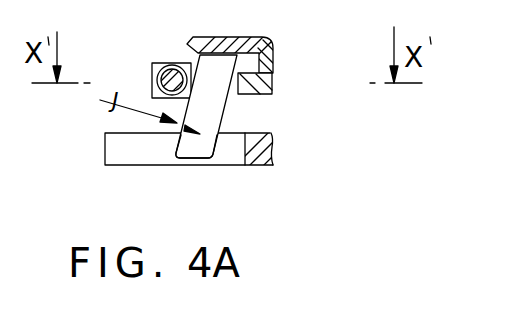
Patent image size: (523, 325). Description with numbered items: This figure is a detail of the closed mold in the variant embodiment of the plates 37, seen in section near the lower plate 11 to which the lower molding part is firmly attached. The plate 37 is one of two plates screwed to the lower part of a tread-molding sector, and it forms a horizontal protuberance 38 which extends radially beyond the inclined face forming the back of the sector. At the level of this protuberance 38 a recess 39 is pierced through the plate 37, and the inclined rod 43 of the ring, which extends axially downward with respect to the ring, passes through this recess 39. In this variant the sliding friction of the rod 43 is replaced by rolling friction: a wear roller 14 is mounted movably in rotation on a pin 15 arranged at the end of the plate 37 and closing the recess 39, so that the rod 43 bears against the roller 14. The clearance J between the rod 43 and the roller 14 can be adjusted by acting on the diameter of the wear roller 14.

The lower plate 11 is at (258, 164).
The wear roller 14 is at (175, 67).
The pin 15 is at (204, 118).
The plate 37 is at (273, 80).
The horizontal protuberance 38 is at (152, 66).
The recess 39 is at (239, 92).
The inclined rod 43 is at (192, 147).